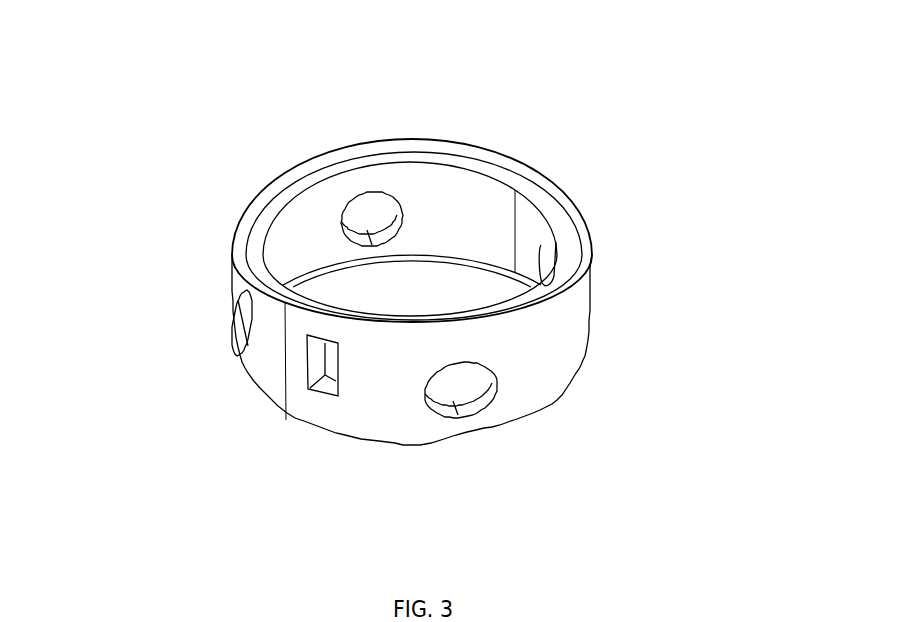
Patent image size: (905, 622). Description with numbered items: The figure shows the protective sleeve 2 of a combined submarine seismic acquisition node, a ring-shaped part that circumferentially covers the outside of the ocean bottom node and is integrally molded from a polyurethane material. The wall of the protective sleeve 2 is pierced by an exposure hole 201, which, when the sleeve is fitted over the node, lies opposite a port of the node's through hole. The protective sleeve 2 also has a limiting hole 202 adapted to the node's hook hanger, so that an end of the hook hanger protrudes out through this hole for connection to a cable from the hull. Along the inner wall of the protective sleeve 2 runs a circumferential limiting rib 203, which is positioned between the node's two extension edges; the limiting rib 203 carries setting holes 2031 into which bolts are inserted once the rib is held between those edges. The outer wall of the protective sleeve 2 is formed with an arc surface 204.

The protective sleeve 2 is at (530, 348).
The exposure hole 201 is at (440, 400).
The limiting hole 202 is at (313, 390).
The limiting rib 203 is at (305, 182).
The setting holes 2031 is at (275, 202).
The arc surface 204 is at (588, 240).